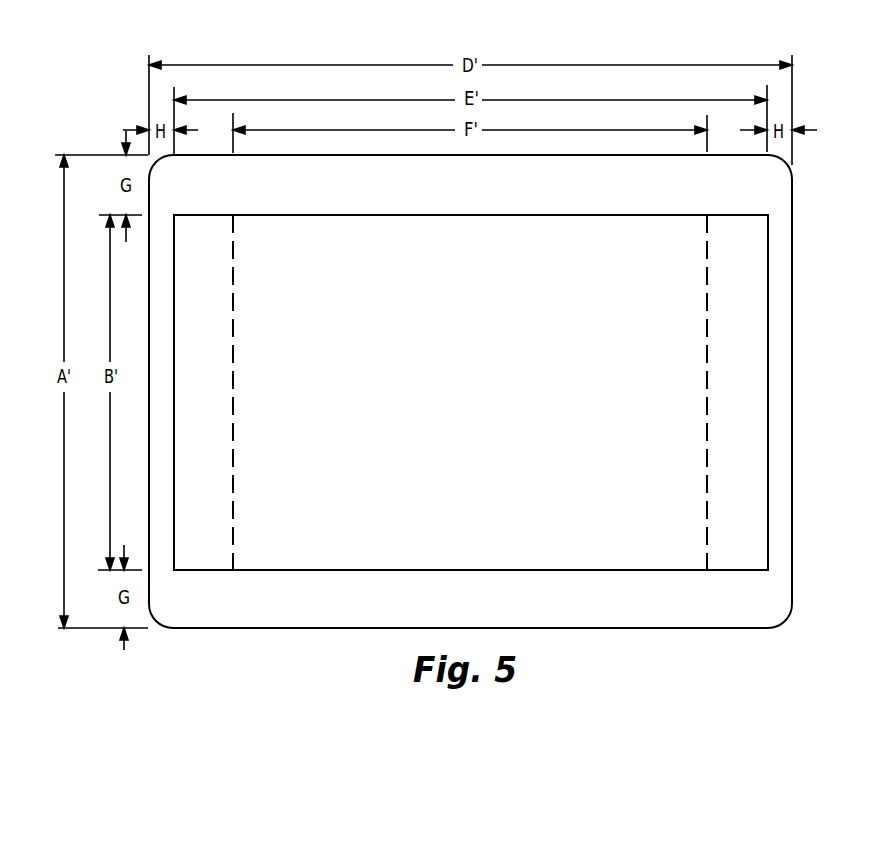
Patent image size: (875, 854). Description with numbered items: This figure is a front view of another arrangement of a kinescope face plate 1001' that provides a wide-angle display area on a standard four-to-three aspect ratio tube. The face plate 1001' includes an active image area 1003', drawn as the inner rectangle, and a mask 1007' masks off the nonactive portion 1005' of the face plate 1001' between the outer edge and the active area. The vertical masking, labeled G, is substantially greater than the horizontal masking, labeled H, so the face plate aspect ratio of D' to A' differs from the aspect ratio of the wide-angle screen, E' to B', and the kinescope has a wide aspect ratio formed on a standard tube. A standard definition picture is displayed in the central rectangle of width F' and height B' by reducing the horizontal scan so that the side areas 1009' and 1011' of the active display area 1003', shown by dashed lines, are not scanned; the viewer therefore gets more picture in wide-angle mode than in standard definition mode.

The face plate 1001' is at (494, 391).
The active image area 1003' is at (470, 392).
The nonactive portion 1005' is at (494, 391).
The mask 1007' is at (506, 392).
The area 1009' is at (209, 392).
The area 1011' is at (732, 392).